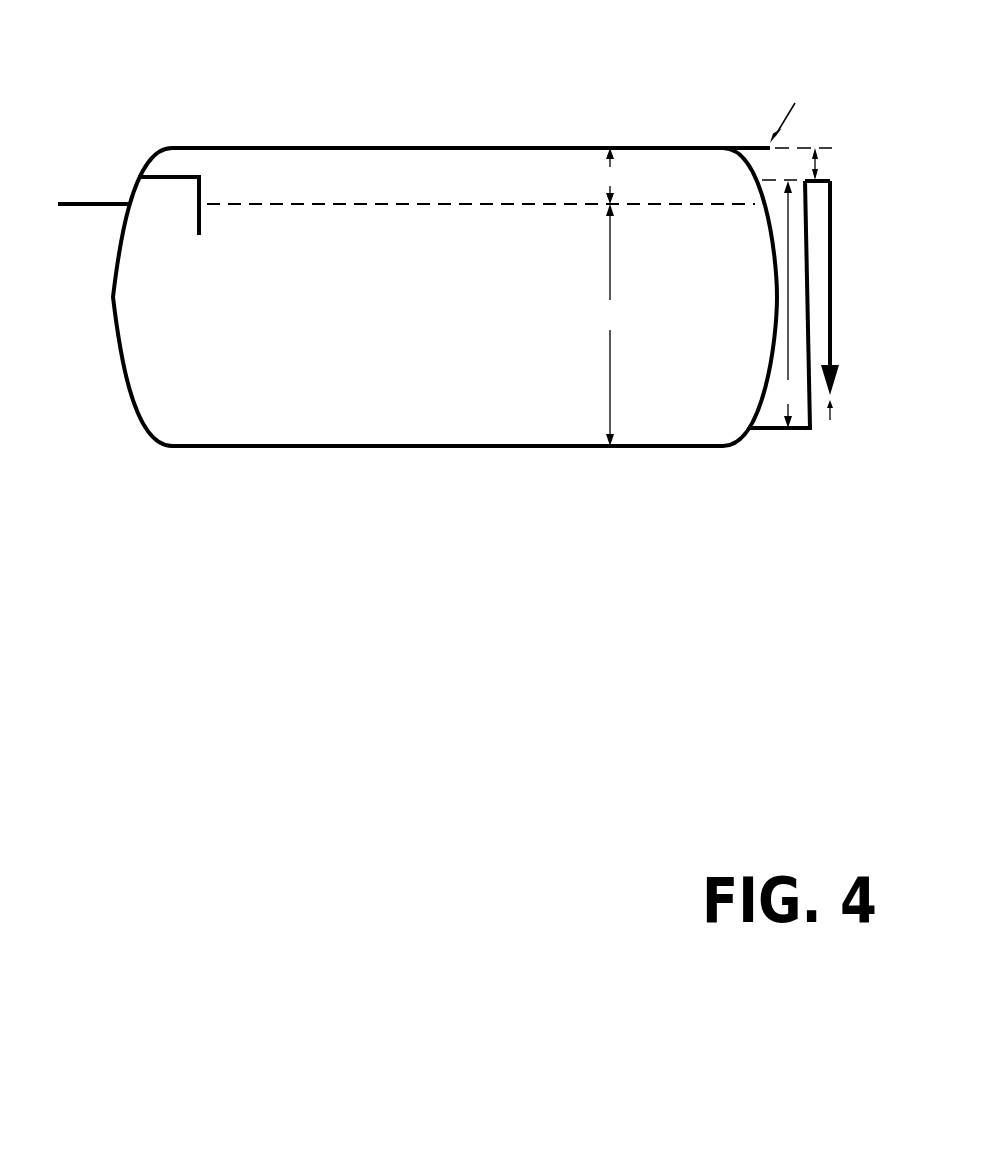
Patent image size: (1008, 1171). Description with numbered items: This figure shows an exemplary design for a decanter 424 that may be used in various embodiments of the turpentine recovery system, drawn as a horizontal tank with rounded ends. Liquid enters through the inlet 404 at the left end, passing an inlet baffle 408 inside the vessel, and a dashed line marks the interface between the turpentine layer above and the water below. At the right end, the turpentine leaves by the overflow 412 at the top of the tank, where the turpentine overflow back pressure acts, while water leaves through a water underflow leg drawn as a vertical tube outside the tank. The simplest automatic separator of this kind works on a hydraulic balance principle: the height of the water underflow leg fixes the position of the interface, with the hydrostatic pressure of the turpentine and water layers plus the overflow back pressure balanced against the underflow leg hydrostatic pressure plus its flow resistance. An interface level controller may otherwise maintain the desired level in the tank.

The inlet pipe 404 is at (92, 202).
The inlet baffle 408 is at (175, 212).
The outlet / pressure tap 412 is at (745, 146).
The decanter 424 is at (383, 115).